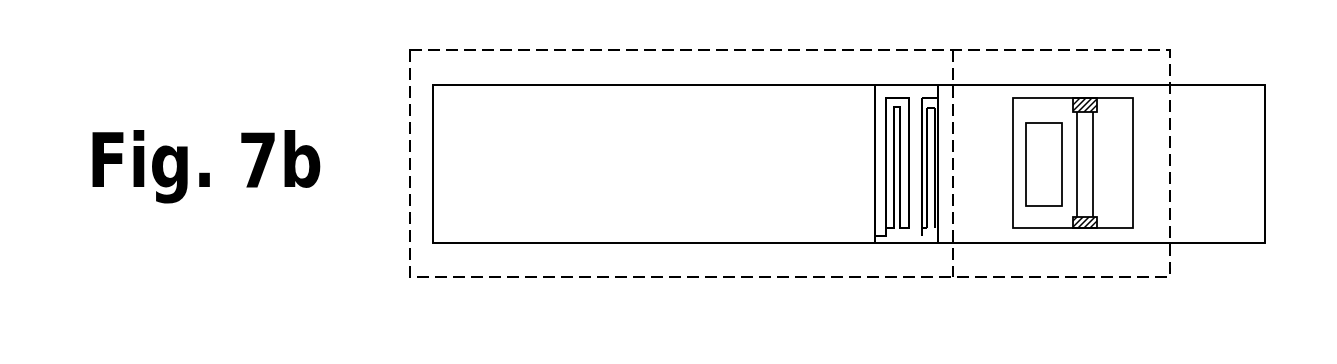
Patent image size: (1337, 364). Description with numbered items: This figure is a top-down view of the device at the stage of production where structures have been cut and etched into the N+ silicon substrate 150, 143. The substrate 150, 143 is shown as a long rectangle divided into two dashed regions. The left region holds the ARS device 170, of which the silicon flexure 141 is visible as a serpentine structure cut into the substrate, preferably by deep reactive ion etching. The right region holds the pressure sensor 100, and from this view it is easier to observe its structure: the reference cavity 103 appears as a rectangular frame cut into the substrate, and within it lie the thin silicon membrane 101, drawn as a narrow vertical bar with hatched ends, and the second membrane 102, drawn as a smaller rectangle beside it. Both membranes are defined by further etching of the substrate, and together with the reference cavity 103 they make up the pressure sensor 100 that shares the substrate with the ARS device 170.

The ARS device 170 is at (790, 181).
The pressure sensor 100 is at (1147, 156).
The thin silicon membrane 101 is at (1085, 163).
The second membrane 102 is at (1047, 155).
The reference cavity 103 is at (1113, 198).
The silicon flexure 141 is at (888, 207).
The substrate 150 is at (849, 164).
The substrate 143 is at (849, 164).